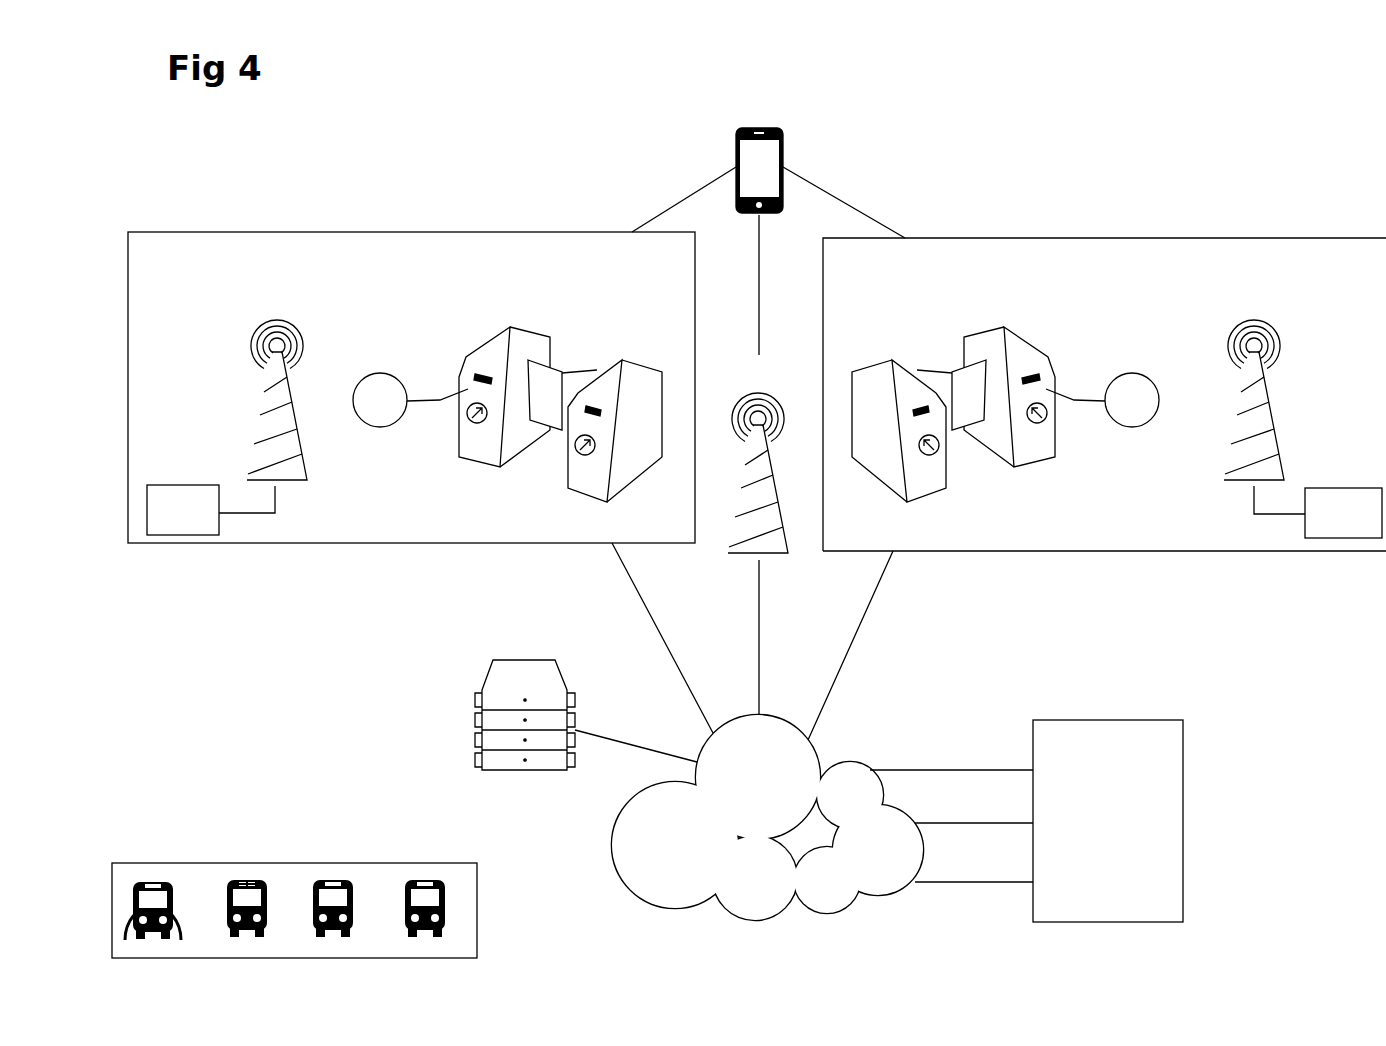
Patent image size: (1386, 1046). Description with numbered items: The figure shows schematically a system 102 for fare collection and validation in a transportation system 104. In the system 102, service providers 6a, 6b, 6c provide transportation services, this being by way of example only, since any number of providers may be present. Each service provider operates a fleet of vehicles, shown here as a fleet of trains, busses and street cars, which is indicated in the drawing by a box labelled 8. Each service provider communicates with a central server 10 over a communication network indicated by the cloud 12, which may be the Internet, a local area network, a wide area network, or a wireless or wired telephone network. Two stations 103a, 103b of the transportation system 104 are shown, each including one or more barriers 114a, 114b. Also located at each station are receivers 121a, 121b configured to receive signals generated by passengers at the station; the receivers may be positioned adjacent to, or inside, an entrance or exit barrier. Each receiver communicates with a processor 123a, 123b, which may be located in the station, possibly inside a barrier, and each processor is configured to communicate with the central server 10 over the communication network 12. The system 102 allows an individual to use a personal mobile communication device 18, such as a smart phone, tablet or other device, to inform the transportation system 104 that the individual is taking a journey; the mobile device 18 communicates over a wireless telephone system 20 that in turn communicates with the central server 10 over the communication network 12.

The system 102 is at (1302, 150).
The personal mobile communication device 18 is at (759, 152).
The wireless telephone system 20 is at (758, 457).
The station 103a is at (411, 358).
The station 103b is at (1104, 362).
The receiver 121a is at (275, 373).
The receiver 121b is at (1255, 373).
The processor 123a is at (211, 510).
The processor 123b is at (1318, 512).
The barrier 114a is at (560, 417).
The barrier 114b is at (953, 417).
The central server 10 is at (525, 695).
The communication network 12 is at (767, 803).
The transportation system 104 is at (1108, 802).
The service provider 6a is at (1111, 766).
The service provider 6b is at (1111, 823).
The service provider 6c is at (1111, 883).
The transit vehicles 8 is at (294, 890).